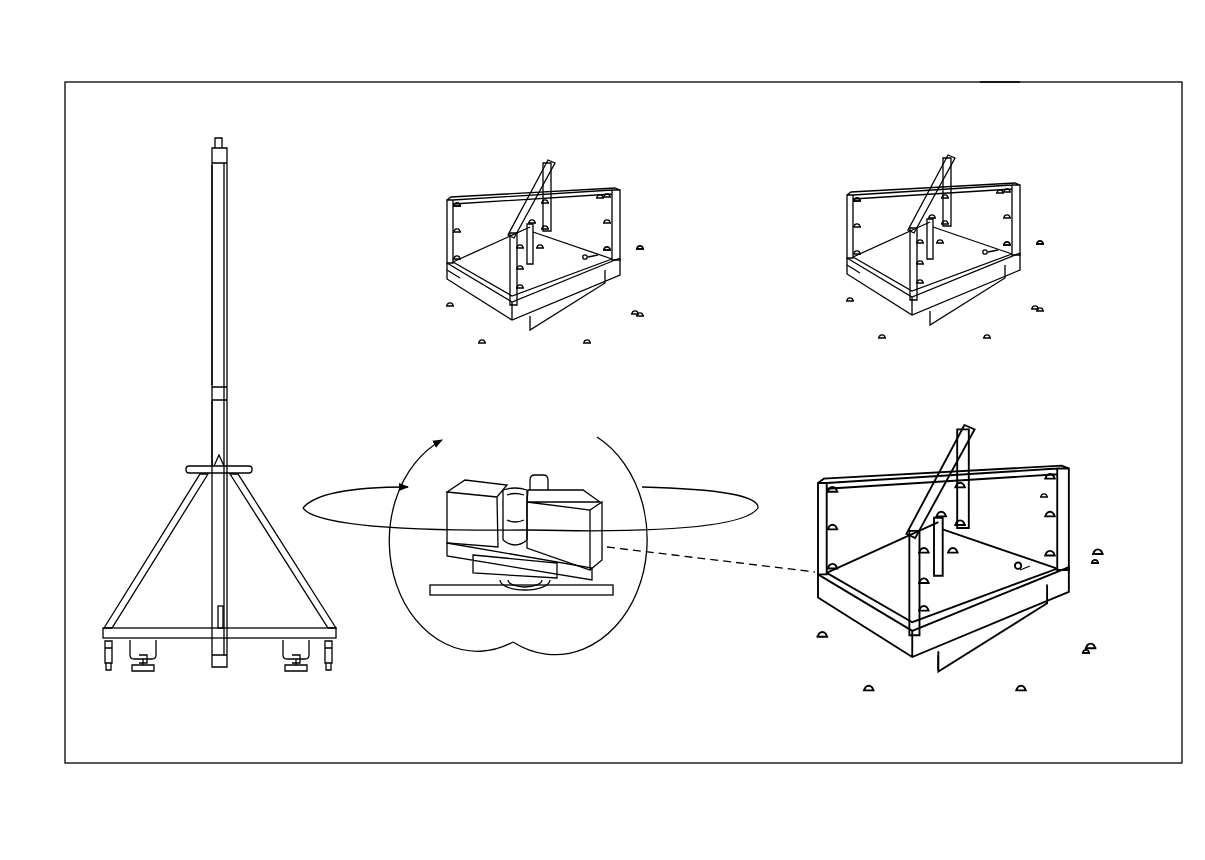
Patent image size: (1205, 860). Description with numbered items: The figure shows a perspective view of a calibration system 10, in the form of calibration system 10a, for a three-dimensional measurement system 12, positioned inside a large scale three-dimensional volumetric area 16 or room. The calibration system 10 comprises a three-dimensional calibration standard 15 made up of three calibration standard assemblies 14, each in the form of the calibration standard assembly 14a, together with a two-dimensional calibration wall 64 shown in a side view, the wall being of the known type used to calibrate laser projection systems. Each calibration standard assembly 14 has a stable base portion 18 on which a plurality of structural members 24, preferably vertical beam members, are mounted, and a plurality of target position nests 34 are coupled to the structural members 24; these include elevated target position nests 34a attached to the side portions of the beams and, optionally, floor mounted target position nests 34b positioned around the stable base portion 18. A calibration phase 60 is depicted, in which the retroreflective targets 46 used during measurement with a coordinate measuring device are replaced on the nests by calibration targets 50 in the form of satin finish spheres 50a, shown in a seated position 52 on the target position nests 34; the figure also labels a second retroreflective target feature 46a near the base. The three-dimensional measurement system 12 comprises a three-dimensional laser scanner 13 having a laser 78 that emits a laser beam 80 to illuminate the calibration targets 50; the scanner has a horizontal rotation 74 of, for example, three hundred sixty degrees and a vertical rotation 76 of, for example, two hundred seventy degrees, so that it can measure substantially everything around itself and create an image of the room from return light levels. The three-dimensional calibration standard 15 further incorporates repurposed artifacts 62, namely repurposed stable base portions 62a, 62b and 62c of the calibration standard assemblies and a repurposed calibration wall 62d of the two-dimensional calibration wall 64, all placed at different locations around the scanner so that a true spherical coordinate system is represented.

The calibration system 10 is at (1093, 75).
The calibration system 10a is at (1000, 82).
The three-dimensional measurement system 12 is at (765, 625).
The three-dimensional laser scanner 13 is at (604, 560).
The calibration standard assembly 14 is at (570, 178).
The calibration standard assembly 14a is at (552, 160).
The three-dimensional calibration standard 15 is at (350, 80).
The large scale three-dimensional volumetric area 16 is at (370, 124).
The stable base portion 18 is at (630, 283).
The structural members 24 is at (536, 172).
The target position nests 34 is at (624, 216).
The elevated target position nests 34a is at (600, 193).
The floor mounted target position nests 34b is at (645, 318).
The retroreflective targets 46 is at (581, 262).
The target point 46a is at (592, 258).
The calibration targets 50 is at (600, 240).
The satin finish spheres 50a is at (638, 244).
The seated position 52 is at (455, 200).
The calibration phase 60 is at (345, 266).
The repurposed artifacts 62 is at (155, 463).
The repurposed stable base portion 62a is at (450, 275).
The repurposed stable base portion 62b is at (850, 270).
The repurposed stable base portion 62c is at (948, 670).
The repurposed calibration wall 62d is at (212, 420).
The two-dimensional calibration wall 64 is at (212, 338).
The horizontal rotation 74 is at (682, 487).
The vertical rotation 76 is at (433, 458).
The laser 78 is at (608, 590).
The laser beam 80 is at (730, 558).